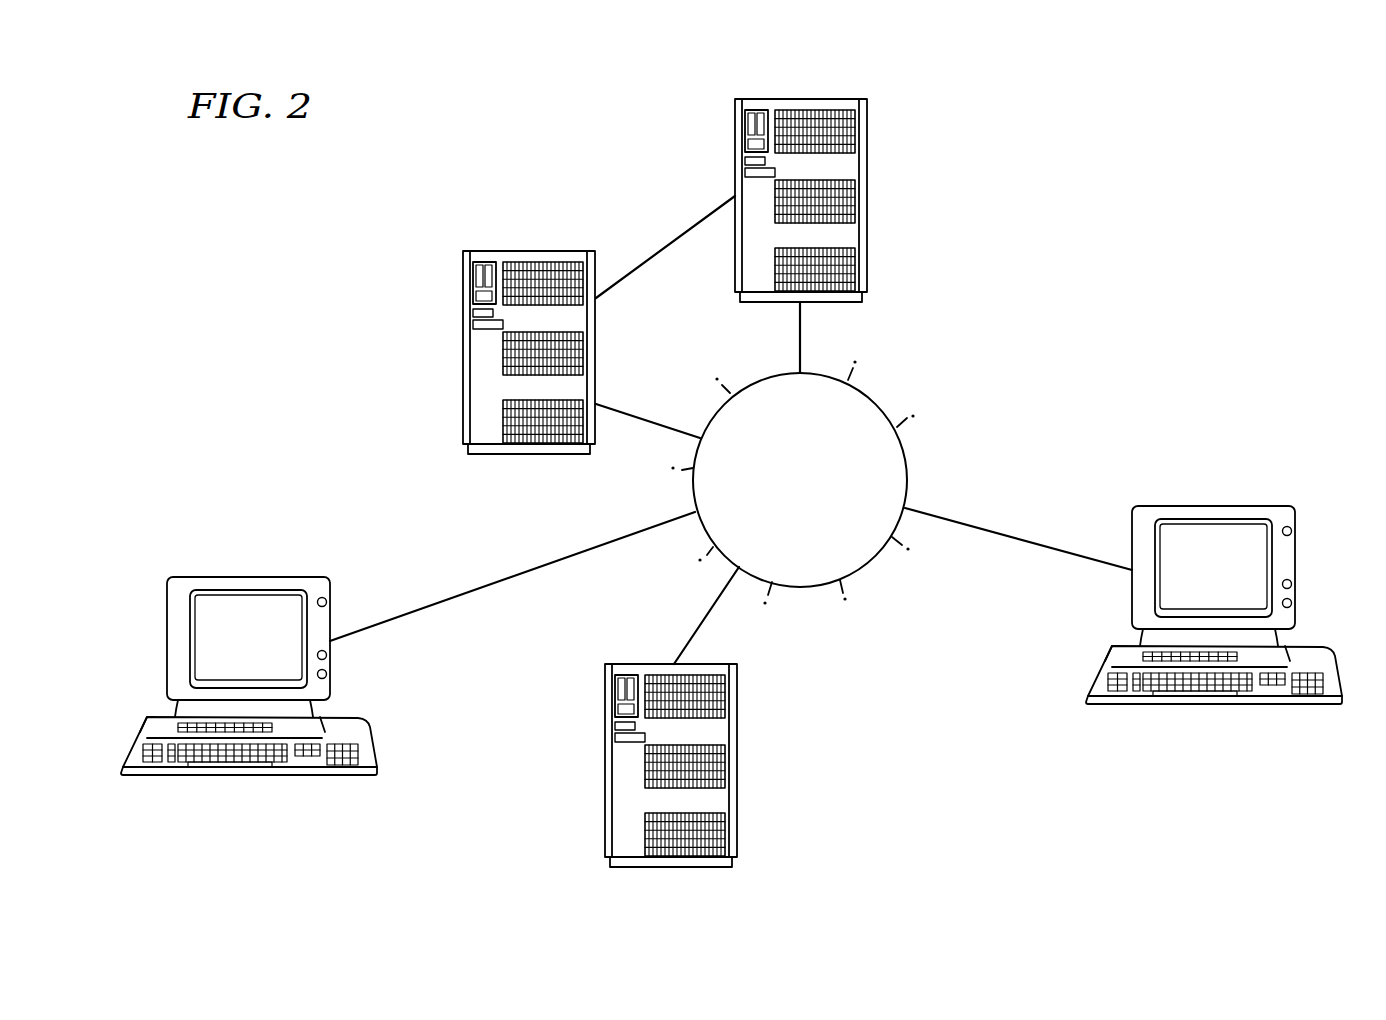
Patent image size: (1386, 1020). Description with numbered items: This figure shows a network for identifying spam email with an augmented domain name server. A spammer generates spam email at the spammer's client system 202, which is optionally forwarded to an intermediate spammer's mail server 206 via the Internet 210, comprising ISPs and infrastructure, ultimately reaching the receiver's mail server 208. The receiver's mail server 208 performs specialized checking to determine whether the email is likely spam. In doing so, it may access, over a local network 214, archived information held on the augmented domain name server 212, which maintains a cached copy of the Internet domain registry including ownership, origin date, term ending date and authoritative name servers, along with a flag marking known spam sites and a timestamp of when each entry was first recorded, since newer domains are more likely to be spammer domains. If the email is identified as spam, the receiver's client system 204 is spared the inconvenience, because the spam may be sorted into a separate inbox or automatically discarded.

The spammer's client system 202 is at (248, 577).
The receiver's client system 204 is at (1217, 507).
The spammer's mail server 206 is at (737, 823).
The receiver's mail server 208 is at (867, 238).
The Internet 210 is at (908, 478).
The augmented domain name server 212 is at (465, 370).
The local network 214 is at (663, 249).